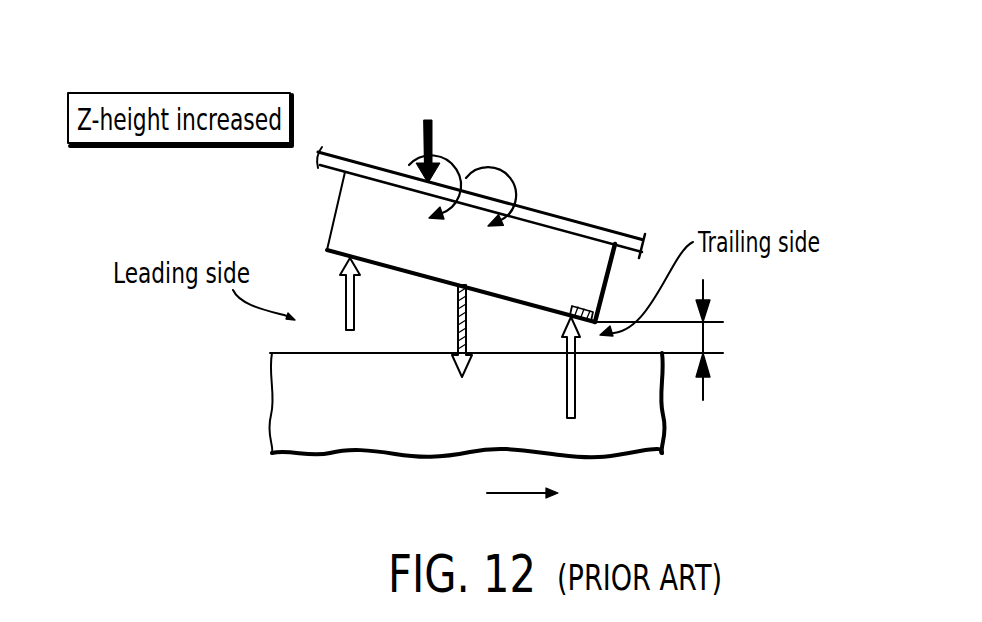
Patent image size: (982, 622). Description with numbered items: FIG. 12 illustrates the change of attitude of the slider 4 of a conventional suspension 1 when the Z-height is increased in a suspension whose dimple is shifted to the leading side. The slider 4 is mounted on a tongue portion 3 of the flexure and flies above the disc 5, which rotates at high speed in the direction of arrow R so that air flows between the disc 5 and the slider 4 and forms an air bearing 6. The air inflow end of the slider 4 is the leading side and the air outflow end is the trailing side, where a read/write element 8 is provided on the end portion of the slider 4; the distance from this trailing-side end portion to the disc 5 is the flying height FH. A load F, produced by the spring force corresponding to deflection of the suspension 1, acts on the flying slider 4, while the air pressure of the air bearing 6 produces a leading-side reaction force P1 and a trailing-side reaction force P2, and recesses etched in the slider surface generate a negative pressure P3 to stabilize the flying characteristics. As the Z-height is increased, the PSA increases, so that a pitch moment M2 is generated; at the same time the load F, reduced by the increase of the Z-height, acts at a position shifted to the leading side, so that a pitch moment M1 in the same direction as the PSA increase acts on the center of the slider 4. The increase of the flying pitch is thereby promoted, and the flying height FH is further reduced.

The suspension 1 is at (355, 94).
The tongue portion 3 is at (530, 213).
The slider 4 is at (545, 253).
The disc 5 is at (447, 418).
The air bearing 6 is at (375, 337).
The read/write element 8 is at (590, 310).
The load F is at (428, 134).
The pitch moment M1 is at (495, 168).
The pitch moment M2 is at (451, 158).
The leading-side reaction force P1 is at (343, 292).
The trailing-side reaction force P2 is at (568, 369).
The negative pressure P3 is at (457, 312).
The flying height FH is at (703, 335).
The direction of disc rotation R is at (535, 497).